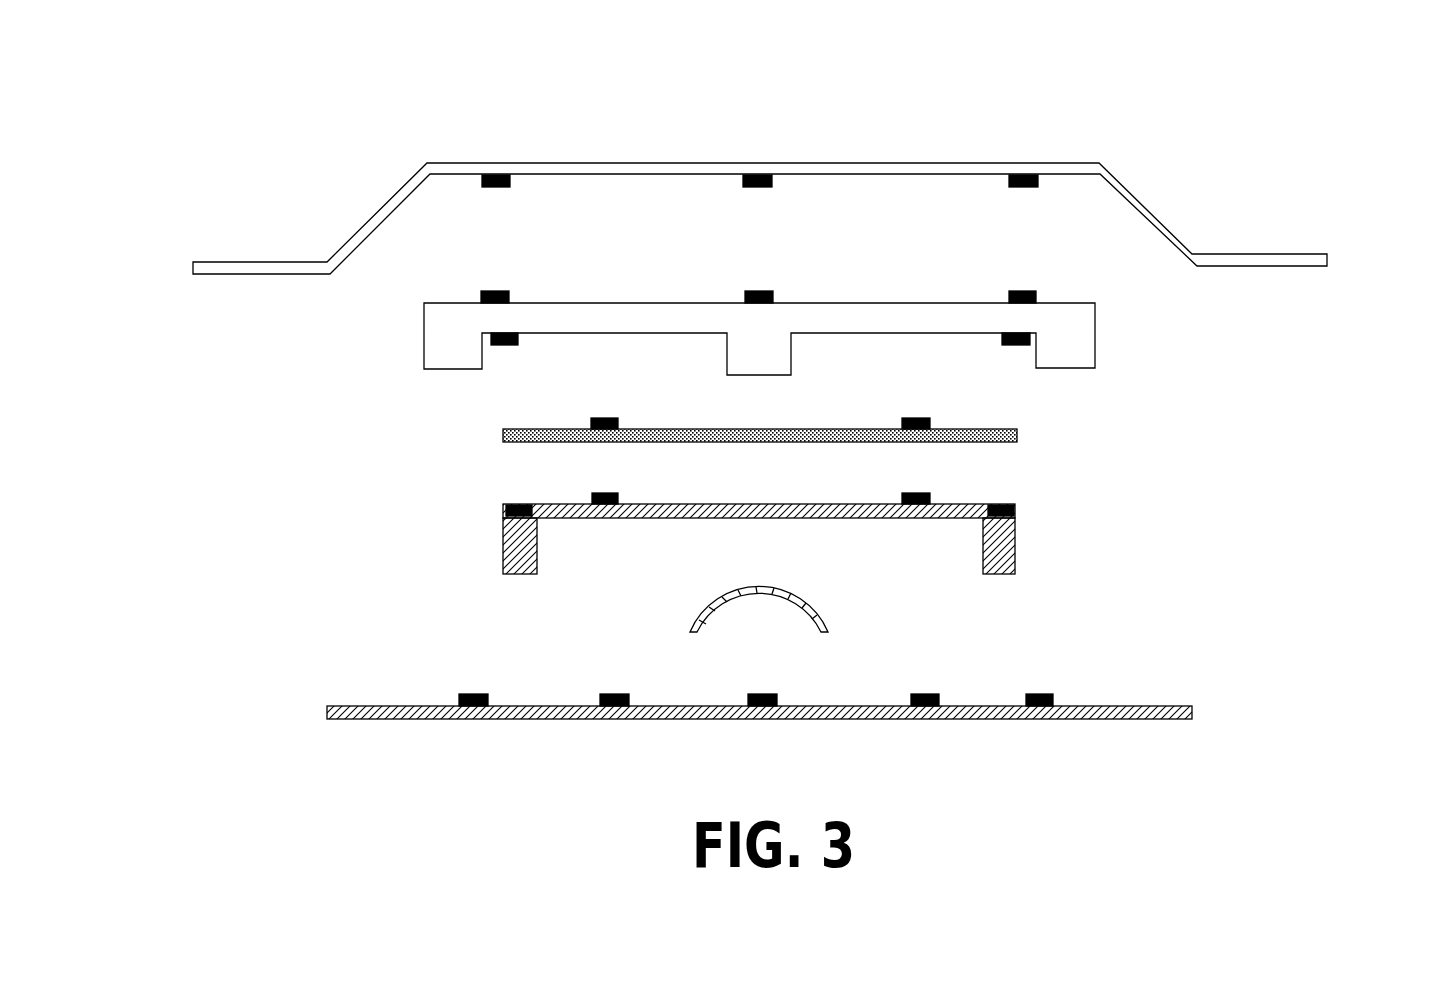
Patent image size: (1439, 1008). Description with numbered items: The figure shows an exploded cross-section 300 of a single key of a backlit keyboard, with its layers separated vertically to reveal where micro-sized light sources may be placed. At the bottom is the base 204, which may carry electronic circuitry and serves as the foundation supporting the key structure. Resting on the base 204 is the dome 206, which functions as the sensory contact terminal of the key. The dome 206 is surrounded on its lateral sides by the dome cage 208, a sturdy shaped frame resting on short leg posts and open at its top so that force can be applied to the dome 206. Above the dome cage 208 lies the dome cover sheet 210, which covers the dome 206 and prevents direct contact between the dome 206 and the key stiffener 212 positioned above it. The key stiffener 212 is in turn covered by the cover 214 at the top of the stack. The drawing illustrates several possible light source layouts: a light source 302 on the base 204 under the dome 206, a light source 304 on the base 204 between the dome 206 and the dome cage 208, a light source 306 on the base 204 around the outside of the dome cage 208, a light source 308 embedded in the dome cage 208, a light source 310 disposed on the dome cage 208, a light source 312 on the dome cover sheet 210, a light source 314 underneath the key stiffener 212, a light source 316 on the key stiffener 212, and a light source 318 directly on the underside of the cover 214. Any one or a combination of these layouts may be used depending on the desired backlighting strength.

The exploded cross-section 300 is at (185, 188).
The cover 214 is at (1273, 260).
The light source 318 is at (501, 175).
The key stiffener 212 is at (1088, 332).
The light source 316 is at (773, 291).
The light source 314 is at (1013, 345).
The dome cover sheet 210 is at (518, 443).
The light source 312 is at (590, 423).
The dome cage 208 is at (1005, 563).
The light source 310 is at (600, 506).
The light source 308 is at (1013, 504).
The dome 206 is at (698, 614).
The base 204 is at (1140, 706).
The light source 302 is at (760, 706).
The light source 304 is at (923, 707).
The light source 306 is at (1039, 695).